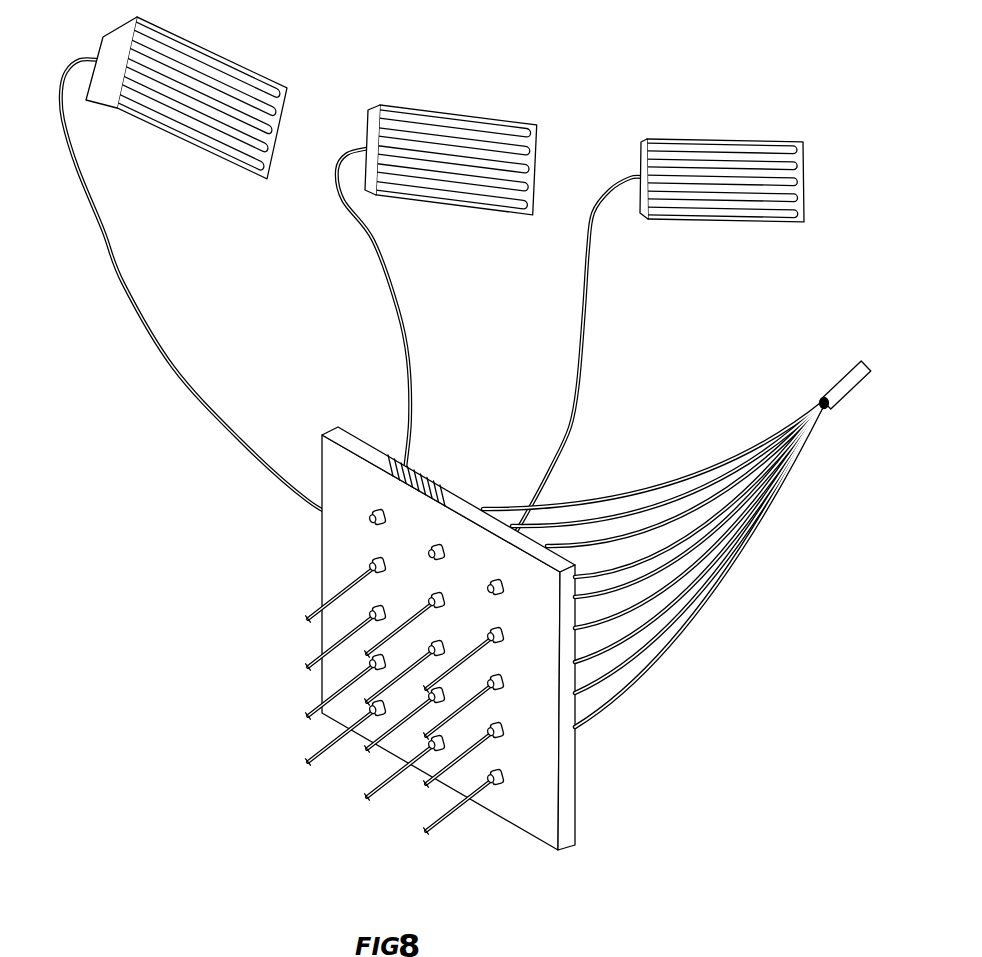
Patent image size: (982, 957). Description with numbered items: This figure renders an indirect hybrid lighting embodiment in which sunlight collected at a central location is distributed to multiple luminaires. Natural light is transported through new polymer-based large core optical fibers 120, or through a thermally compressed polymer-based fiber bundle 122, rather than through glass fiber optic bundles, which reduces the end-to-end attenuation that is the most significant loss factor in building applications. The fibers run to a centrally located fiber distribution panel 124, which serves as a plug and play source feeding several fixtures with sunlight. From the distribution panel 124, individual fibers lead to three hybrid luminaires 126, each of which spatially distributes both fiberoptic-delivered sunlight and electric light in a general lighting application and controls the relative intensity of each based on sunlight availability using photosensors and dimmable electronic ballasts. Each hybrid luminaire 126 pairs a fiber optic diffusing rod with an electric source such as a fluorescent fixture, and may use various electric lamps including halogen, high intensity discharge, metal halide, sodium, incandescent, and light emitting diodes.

The polymer-based large core optical fibers 120 is at (727, 487).
The thermally compressed polymer-based fiber bundle 122 is at (837, 390).
The fiber distribution panel 124 is at (447, 498).
The hybrid luminaire 126 is at (445, 120).